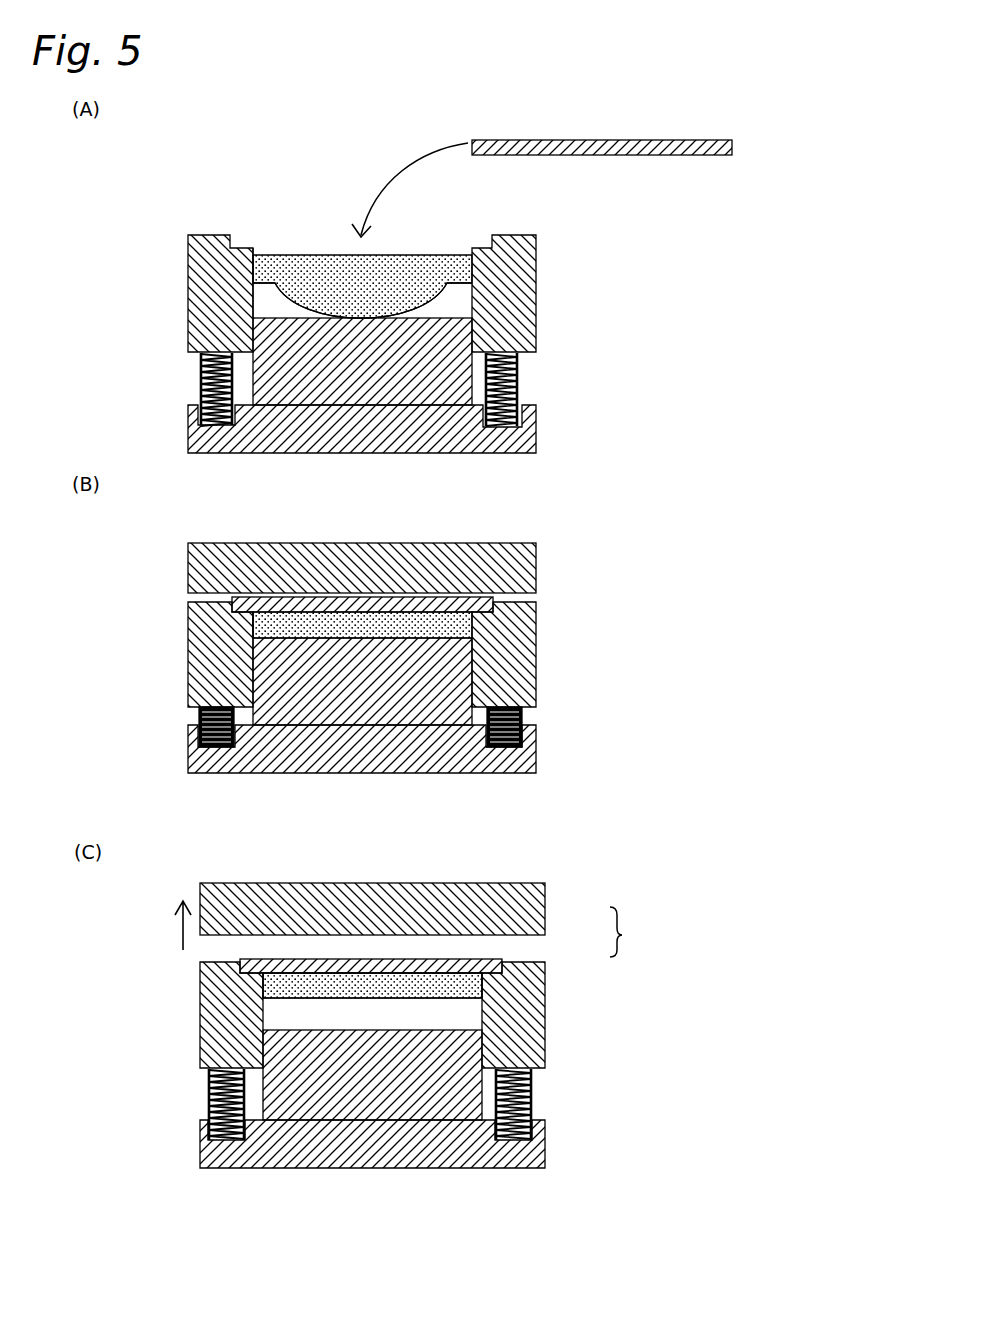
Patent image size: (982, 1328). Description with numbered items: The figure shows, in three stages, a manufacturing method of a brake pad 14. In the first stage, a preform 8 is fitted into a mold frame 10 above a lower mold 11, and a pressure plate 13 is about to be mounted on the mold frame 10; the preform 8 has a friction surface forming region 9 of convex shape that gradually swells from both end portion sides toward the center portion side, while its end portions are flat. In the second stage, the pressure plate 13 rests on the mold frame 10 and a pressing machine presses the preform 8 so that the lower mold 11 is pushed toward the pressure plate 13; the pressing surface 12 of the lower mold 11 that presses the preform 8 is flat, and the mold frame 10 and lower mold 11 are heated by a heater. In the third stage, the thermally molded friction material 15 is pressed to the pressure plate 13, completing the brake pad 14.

The preform 8 is at (253, 268).
The friction surface forming region 9 is at (284, 296).
The mold frame 10 is at (537, 275).
The lower mold 11 is at (498, 333).
The pressing surface 12 is at (457, 314).
The pressure plate 13 is at (625, 155).
The brake pad 14 is at (652, 948).
The friction material 15 is at (474, 984).